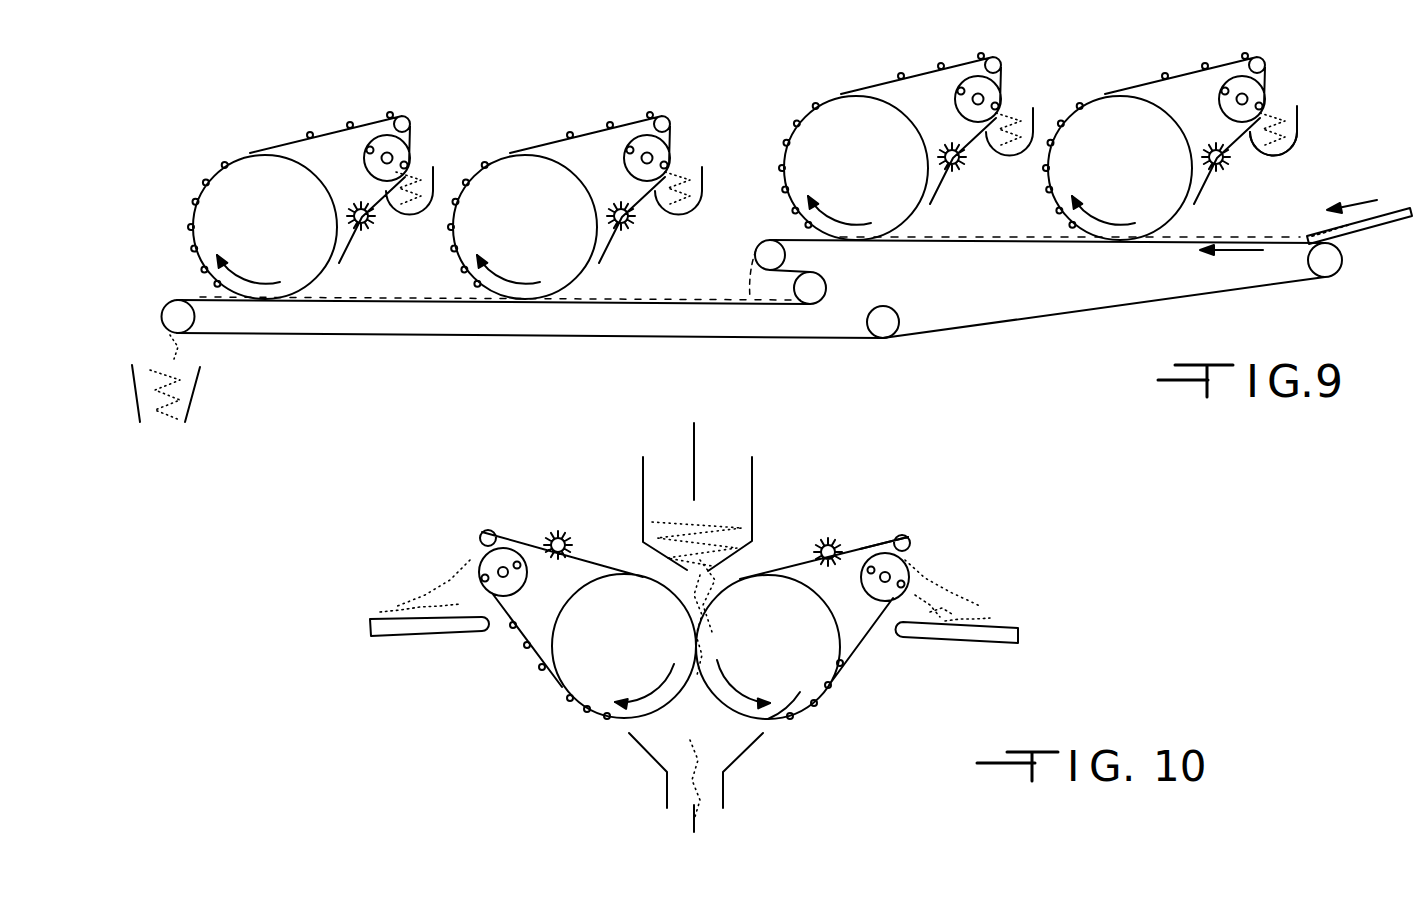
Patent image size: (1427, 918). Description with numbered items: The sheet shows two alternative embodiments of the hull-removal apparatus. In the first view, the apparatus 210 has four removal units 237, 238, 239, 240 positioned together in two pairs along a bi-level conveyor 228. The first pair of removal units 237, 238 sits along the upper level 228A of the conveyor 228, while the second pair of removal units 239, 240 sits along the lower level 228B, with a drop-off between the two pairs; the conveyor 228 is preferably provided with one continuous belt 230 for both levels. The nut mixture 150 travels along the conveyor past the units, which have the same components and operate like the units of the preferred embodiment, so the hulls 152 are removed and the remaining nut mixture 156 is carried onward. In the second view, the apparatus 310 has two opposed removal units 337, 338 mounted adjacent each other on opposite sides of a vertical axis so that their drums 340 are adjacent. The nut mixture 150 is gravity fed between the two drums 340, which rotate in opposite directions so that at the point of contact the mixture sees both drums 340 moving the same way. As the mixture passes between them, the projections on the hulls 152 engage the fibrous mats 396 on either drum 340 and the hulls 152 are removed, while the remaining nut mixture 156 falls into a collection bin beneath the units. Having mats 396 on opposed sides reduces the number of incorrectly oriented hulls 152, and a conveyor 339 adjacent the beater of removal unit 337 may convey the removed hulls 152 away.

In FIG. 9, the apparatus 210 is at (688, 88).
In FIG. 9, the bi-level conveyor 228 is at (1260, 287).
In FIG. 9, the upper level 228A is at (1070, 297).
In FIG. 9, the lower level 228B is at (433, 318).
In FIG. 9, the continuous belt 230 is at (943, 330).
In FIG. 9, the removal unit 237 is at (1100, 68).
In FIG. 9, the removal unit 238 is at (829, 74).
In FIG. 9, the removal unit 239 is at (513, 134).
In FIG. 9, the removal unit 240 is at (232, 140).
In FIG. 9, the nut mixture 150 is at (1257, 240).
In FIG. 10, the nut mixture 150 is at (727, 540).
In FIG. 9, the hull 152 is at (1296, 124).
In FIG. 10, the hull 152 is at (1000, 620).
In FIG. 9, the remaining nut mixture 156 is at (175, 387).
In FIG. 10, the remaining nut mixture 156 is at (705, 785).
In FIG. 10, the apparatus 310 is at (780, 500).
In FIG. 10, the removal unit 337 is at (578, 678).
In FIG. 10, the removal unit 338 is at (830, 672).
In FIG. 10, the conveyor 339 is at (422, 634).
In FIG. 10, the drum 340 is at (806, 695).
In FIG. 10, the fibrous mat 396 is at (870, 540).